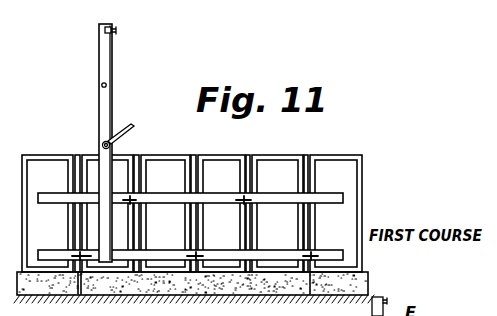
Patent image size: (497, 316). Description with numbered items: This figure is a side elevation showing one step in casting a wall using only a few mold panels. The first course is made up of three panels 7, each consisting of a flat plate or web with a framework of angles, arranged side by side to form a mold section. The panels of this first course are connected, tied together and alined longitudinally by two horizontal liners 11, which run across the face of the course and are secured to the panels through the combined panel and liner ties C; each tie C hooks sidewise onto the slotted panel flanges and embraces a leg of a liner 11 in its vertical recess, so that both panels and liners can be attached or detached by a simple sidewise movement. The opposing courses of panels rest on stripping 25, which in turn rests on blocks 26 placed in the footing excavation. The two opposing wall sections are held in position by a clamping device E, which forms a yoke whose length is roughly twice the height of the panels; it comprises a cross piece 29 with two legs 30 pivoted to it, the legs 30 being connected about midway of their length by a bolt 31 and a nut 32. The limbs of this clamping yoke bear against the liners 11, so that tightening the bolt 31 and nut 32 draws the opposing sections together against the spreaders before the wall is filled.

The panel 7 is at (192, 213).
The liner 11 is at (224, 248).
The combined panel and liner tie C is at (246, 200).
The clamping device E is at (106, 63).
The cross piece 29 is at (406, 295).
The leg 30 is at (104, 97).
The bolt 31 is at (103, 145).
The nut 32 is at (133, 128).
The stripping 25 is at (362, 272).
The block 26 is at (297, 291).